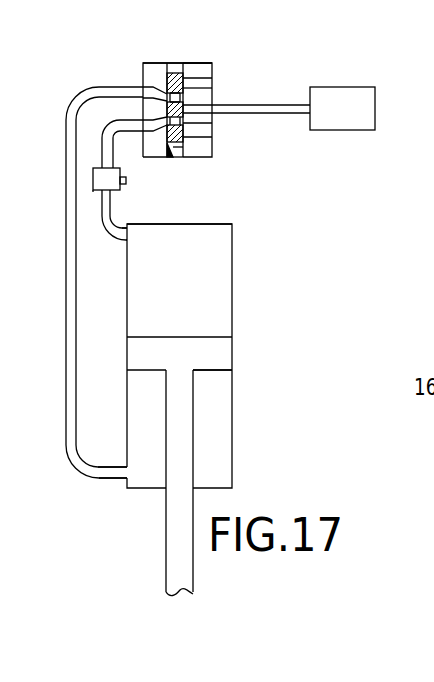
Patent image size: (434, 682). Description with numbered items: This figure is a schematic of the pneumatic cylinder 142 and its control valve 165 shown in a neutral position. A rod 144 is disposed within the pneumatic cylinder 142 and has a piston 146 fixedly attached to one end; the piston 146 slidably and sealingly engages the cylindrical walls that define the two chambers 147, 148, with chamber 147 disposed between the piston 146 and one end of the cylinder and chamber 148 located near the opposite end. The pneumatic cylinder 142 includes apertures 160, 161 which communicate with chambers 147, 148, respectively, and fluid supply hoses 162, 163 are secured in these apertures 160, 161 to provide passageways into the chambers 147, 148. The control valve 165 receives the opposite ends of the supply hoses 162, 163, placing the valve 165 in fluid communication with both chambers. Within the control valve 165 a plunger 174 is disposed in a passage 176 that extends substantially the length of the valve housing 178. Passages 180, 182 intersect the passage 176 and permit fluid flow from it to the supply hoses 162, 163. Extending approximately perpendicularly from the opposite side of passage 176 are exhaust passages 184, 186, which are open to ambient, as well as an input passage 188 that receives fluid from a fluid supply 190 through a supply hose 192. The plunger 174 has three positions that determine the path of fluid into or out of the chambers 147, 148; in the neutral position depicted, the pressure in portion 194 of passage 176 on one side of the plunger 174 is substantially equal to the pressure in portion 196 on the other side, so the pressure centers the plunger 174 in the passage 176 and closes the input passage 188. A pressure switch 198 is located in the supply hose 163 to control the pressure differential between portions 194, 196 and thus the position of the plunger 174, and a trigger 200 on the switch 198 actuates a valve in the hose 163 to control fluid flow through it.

The pneumatic cylinder 142 is at (236, 291).
The rod 144 is at (183, 438).
The piston 146 is at (218, 355).
The chamber 147 is at (220, 400).
The chamber 148 is at (213, 255).
The aperture 160 is at (123, 480).
The aperture 161 is at (127, 242).
The fluid supply hose 162 is at (67, 119).
The fluid supply hose 163 is at (113, 208).
The control valve 165 is at (238, 80).
The plunger 174 is at (172, 158).
The passage 176 is at (193, 72).
The valve housing 178 is at (153, 63).
The passage 180 is at (162, 116).
The passage 182 is at (163, 90).
The exhaust passage 184 is at (207, 137).
The exhaust passage 186 is at (210, 72).
The input passage 188 is at (203, 102).
The fluid supply 190 is at (378, 97).
The supply hose 192 is at (283, 114).
The portion of passage 194 is at (175, 65).
The portion of passage 196 is at (183, 152).
The pressure switch 198 is at (93, 192).
The trigger 200 is at (127, 181).